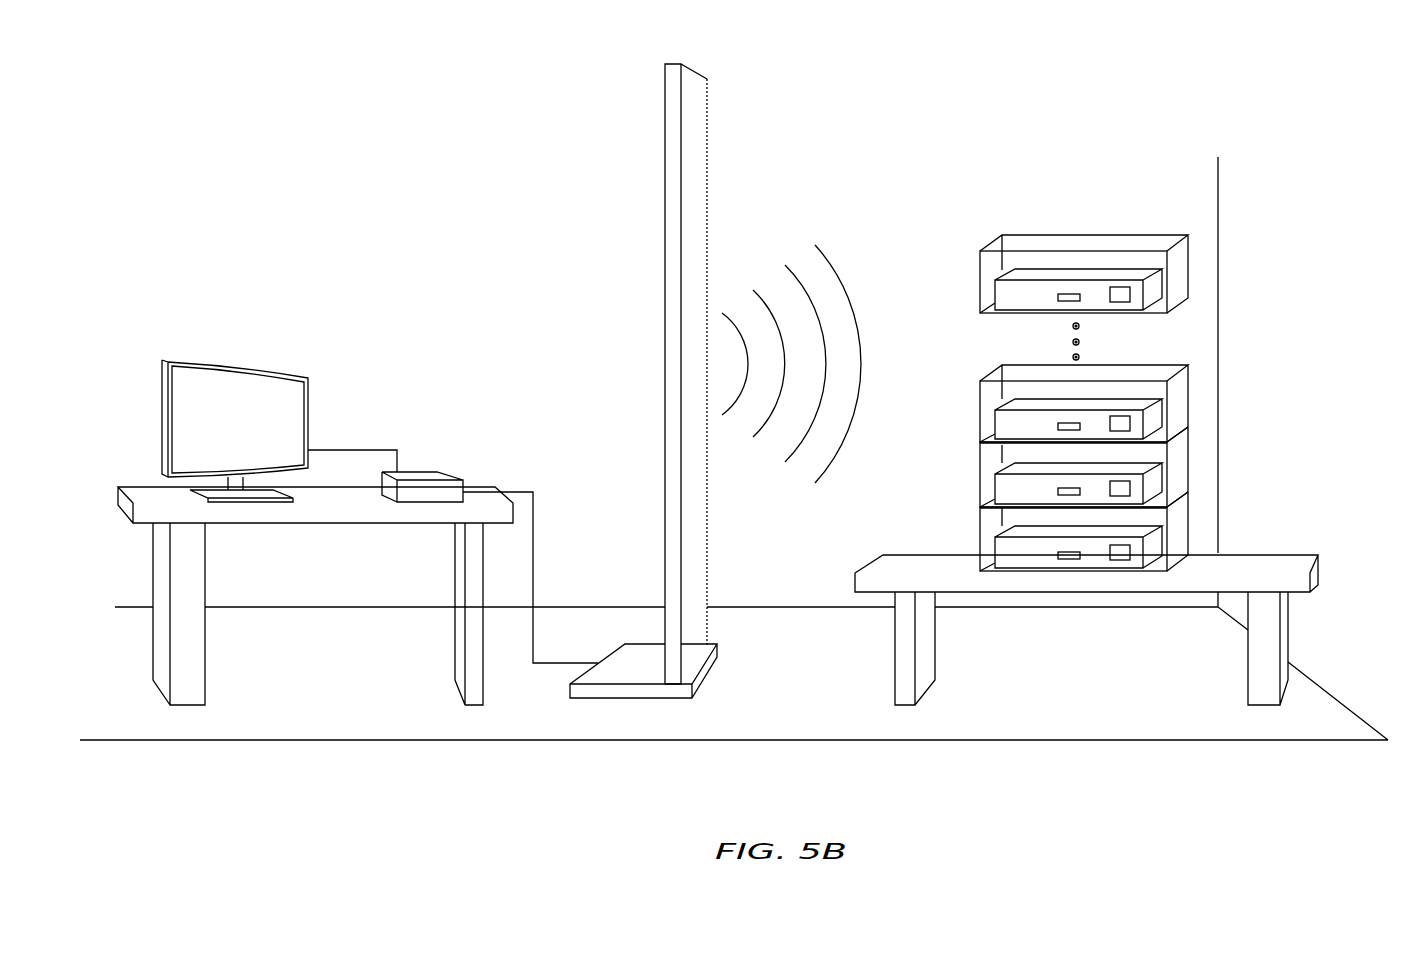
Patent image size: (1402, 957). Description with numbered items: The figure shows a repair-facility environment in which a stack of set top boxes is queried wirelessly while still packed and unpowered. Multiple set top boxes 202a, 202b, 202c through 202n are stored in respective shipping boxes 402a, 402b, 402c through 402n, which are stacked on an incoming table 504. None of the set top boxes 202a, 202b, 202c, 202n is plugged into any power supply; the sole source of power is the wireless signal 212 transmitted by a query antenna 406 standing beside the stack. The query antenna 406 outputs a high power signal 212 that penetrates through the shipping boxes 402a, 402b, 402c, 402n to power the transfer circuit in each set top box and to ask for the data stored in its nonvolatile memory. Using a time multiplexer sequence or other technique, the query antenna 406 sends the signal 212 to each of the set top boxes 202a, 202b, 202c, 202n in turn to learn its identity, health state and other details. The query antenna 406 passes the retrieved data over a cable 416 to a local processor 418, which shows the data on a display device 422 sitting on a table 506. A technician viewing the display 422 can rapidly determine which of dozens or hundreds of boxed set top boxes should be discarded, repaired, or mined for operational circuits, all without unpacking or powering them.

The display device 422 is at (310, 391).
The local processor 418 is at (435, 472).
The table 506 is at (143, 493).
The cable 416 is at (533, 563).
The query antenna 406 is at (672, 178).
The wireless signal 212 is at (846, 248).
The set top box 202n is at (1010, 292).
The set top box 202c is at (1010, 420).
The set top box 202b is at (1010, 485).
The set top box 202a is at (1010, 550).
The shipping box 402n is at (1178, 267).
The shipping box 402c is at (1178, 398).
The shipping box 402b is at (1178, 462).
The shipping box 402a is at (1178, 525).
The incoming table 504 is at (1300, 557).